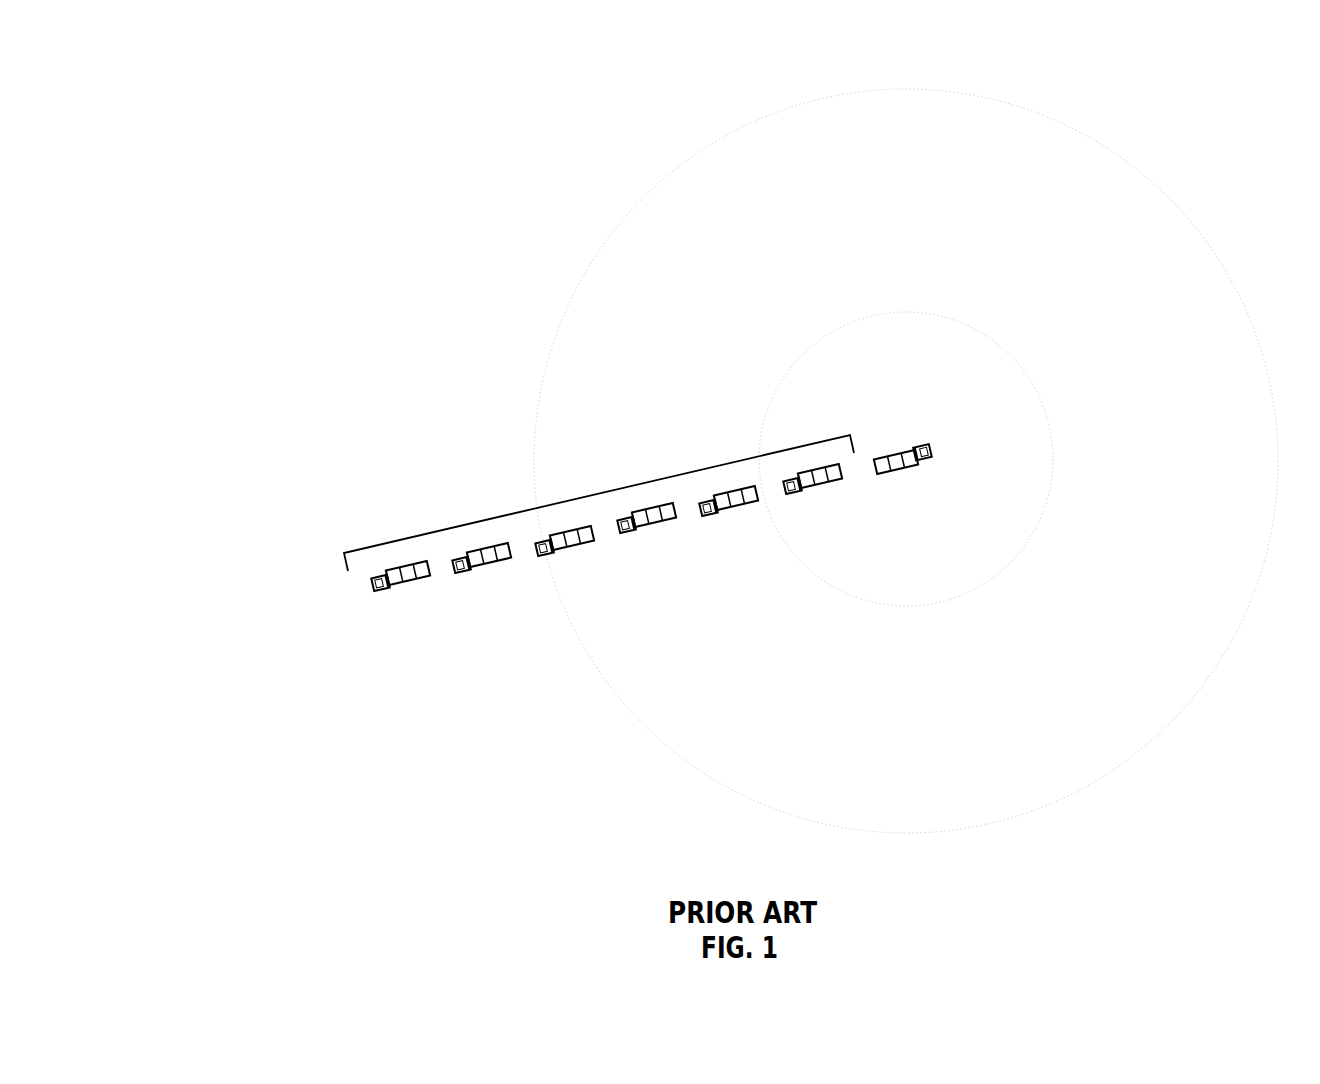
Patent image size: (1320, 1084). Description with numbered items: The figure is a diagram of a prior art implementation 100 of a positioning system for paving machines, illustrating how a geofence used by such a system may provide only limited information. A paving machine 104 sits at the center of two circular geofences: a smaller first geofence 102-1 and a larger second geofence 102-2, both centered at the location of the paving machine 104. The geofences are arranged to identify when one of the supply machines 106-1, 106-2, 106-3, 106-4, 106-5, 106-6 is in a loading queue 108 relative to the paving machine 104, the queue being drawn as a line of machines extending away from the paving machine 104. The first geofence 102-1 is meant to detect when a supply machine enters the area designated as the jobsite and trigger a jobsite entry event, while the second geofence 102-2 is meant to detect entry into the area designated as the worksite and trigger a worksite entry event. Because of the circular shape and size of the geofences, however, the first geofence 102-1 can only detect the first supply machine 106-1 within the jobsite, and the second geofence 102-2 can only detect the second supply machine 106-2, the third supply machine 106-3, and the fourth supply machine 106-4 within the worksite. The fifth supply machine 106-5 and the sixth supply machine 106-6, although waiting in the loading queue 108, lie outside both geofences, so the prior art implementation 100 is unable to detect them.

The prior art implementation 100 is at (218, 89).
The first geofence 102-1 is at (797, 358).
The second geofence 102-2 is at (560, 325).
The paving machine 104 is at (909, 446).
The first supply machine 106-1 is at (818, 490).
The second supply machine 106-2 is at (735, 510).
The third supply machine 106-3 is at (651, 528).
The fourth supply machine 106-4 is at (570, 550).
The fifth supply machine 106-5 is at (485, 568).
The sixth supply machine 106-6 is at (404, 586).
The loading queue 108 is at (423, 535).